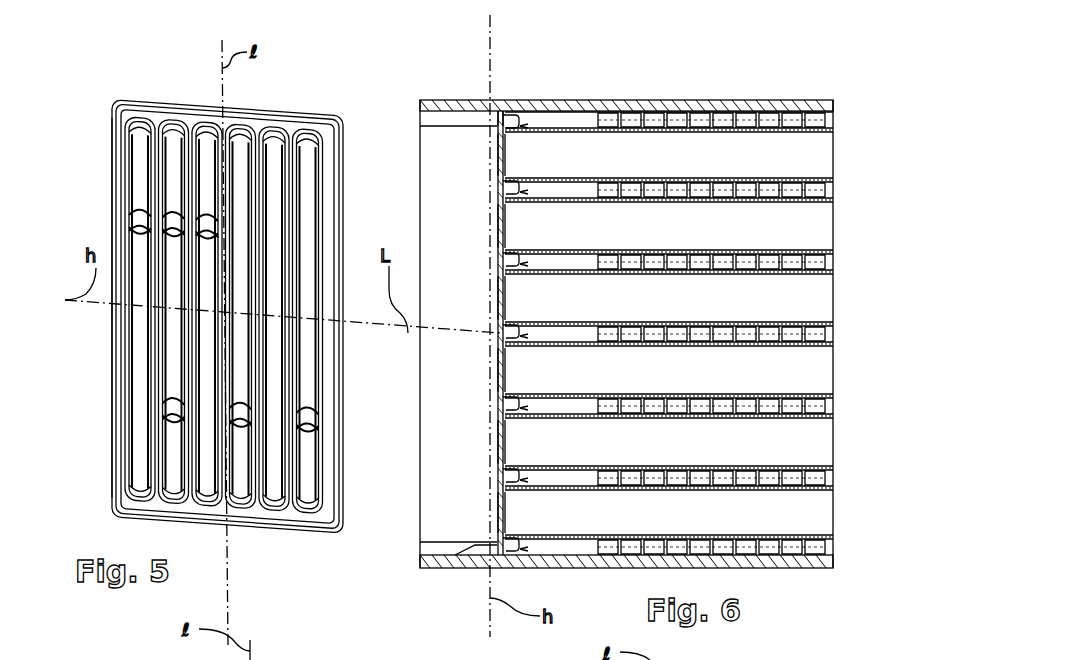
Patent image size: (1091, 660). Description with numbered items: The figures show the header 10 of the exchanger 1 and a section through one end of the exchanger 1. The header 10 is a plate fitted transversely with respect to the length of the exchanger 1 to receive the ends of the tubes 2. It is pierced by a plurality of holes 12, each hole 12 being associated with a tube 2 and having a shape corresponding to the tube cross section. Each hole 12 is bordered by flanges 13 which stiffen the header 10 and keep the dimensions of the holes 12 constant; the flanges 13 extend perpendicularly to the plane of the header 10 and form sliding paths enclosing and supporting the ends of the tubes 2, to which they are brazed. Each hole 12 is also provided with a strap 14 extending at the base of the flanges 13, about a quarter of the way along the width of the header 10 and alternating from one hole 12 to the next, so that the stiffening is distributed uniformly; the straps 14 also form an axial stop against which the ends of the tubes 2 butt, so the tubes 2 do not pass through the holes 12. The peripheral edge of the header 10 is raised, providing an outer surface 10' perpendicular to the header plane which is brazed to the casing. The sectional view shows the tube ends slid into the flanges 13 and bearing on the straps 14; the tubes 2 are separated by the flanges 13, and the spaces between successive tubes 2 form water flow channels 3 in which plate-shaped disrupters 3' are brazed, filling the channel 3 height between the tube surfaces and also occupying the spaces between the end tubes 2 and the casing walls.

In FIG. 6, the exchanger 1 is at (676, 81).
In FIG. 6, the tube 2 is at (648, 185).
In FIG. 6, the water flow channel 3 is at (634, 333).
In FIG. 6, the disrupter 3' is at (711, 329).
In FIG. 5, the header 10 is at (219, 273).
In FIG. 6, the header 10 is at (475, 333).
In FIG. 5, the outer surface 10' is at (78, 308).
In FIG. 6, the outer surface 10' is at (526, 73).
In FIG. 5, the hole 12 is at (178, 462).
In FIG. 6, the hole 12 is at (496, 155).
In FIG. 5, the flange 13 is at (141, 134).
In FIG. 6, the flange 13 is at (525, 124).
In FIG. 5, the strap 14 is at (262, 272).
In FIG. 6, the strap 14 is at (505, 240).